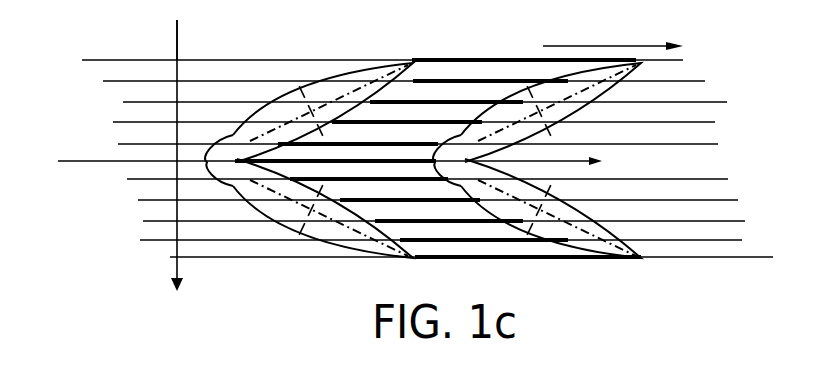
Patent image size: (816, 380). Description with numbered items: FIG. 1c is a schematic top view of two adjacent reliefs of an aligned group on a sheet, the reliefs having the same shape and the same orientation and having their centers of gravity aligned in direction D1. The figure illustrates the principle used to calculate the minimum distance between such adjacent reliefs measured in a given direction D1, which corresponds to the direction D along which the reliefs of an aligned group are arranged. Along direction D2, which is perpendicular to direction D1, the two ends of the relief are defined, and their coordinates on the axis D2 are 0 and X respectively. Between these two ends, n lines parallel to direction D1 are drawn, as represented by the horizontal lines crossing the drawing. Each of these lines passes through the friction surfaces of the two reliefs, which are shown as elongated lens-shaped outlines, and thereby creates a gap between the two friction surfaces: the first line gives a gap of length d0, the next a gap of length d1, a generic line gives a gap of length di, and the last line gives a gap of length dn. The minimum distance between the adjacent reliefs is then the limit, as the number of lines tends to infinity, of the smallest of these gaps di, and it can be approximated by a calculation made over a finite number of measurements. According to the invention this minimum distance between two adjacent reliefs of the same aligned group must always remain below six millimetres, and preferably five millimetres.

The gap length d0 is at (492, 59).
The gap length d1 is at (412, 66).
The gap length di is at (296, 135).
The gap length dn is at (517, 258).
The given direction D is at (613, 32).
The direction of alignment D1 is at (346, 162).
The perpendicular direction D2 is at (142, 151).
The coordinate of relief end X is at (184, 274).
The coordinate of relief end 0 is at (190, 41).